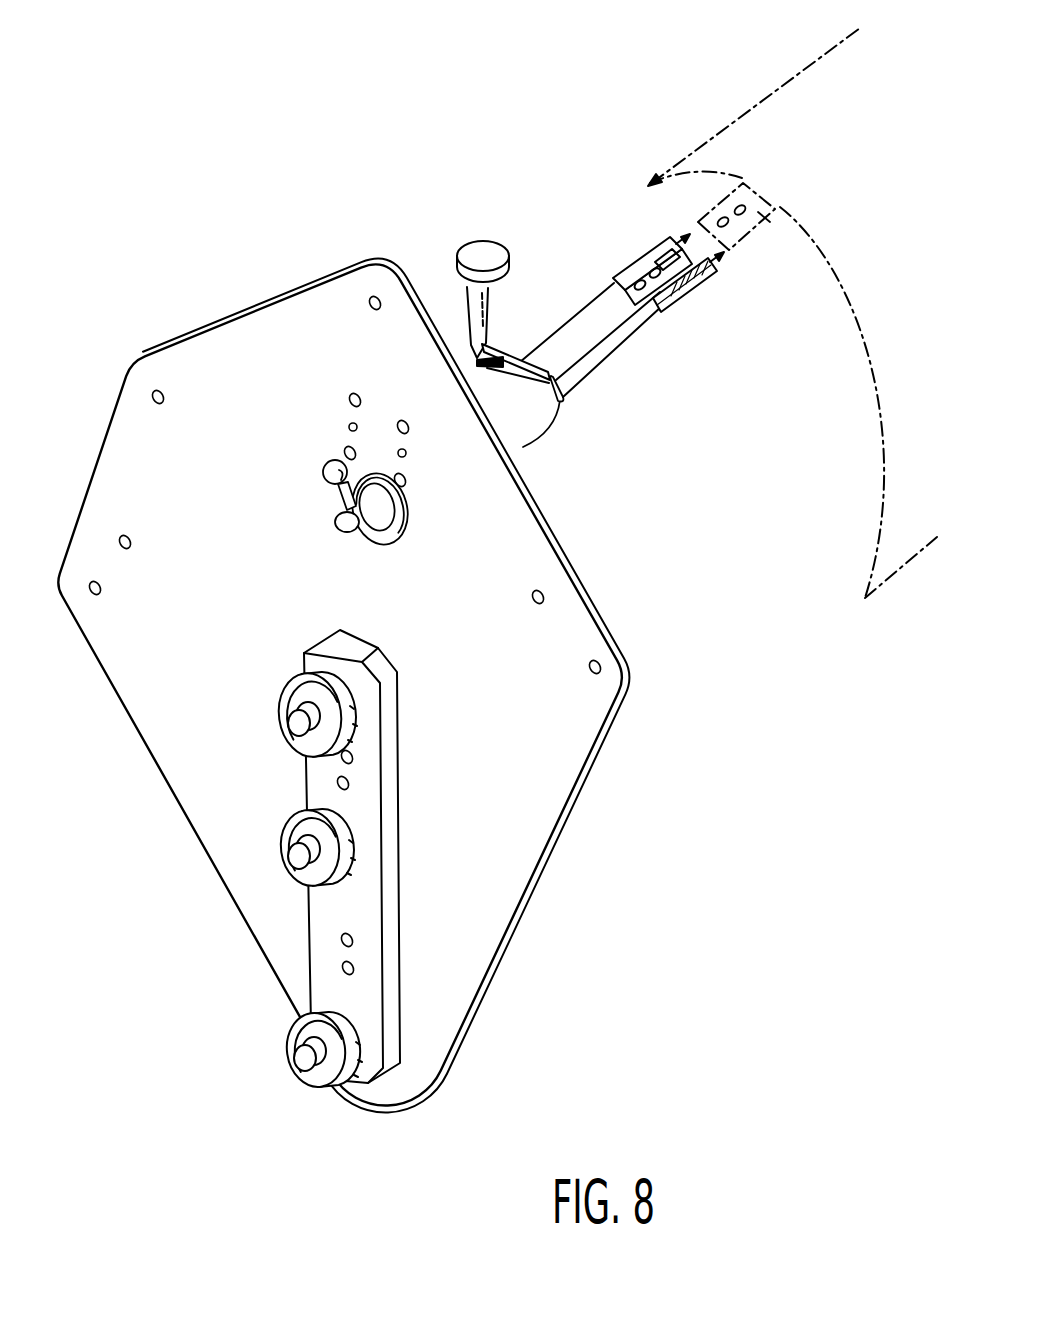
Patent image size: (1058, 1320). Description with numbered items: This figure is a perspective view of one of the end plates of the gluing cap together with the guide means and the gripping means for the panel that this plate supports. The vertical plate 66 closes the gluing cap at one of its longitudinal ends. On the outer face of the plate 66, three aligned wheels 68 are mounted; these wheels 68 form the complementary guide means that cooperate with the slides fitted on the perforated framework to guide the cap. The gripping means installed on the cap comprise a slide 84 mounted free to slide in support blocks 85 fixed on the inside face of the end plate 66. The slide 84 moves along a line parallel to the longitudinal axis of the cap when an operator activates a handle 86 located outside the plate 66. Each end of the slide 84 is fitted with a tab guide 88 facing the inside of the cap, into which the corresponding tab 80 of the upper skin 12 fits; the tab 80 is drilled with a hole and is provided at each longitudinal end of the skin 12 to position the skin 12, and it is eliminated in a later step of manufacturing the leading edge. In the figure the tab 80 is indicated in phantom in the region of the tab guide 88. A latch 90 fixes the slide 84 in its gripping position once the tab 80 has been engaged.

The upper skin 12 is at (737, 153).
The vertical plate 66 is at (540, 783).
The wheels 68 is at (293, 1033).
The tab 80 is at (764, 219).
The slide 84 is at (582, 317).
The support block 85 is at (542, 413).
The handle 86 is at (323, 470).
The tab guide 88 is at (703, 283).
The latch 90 is at (478, 243).